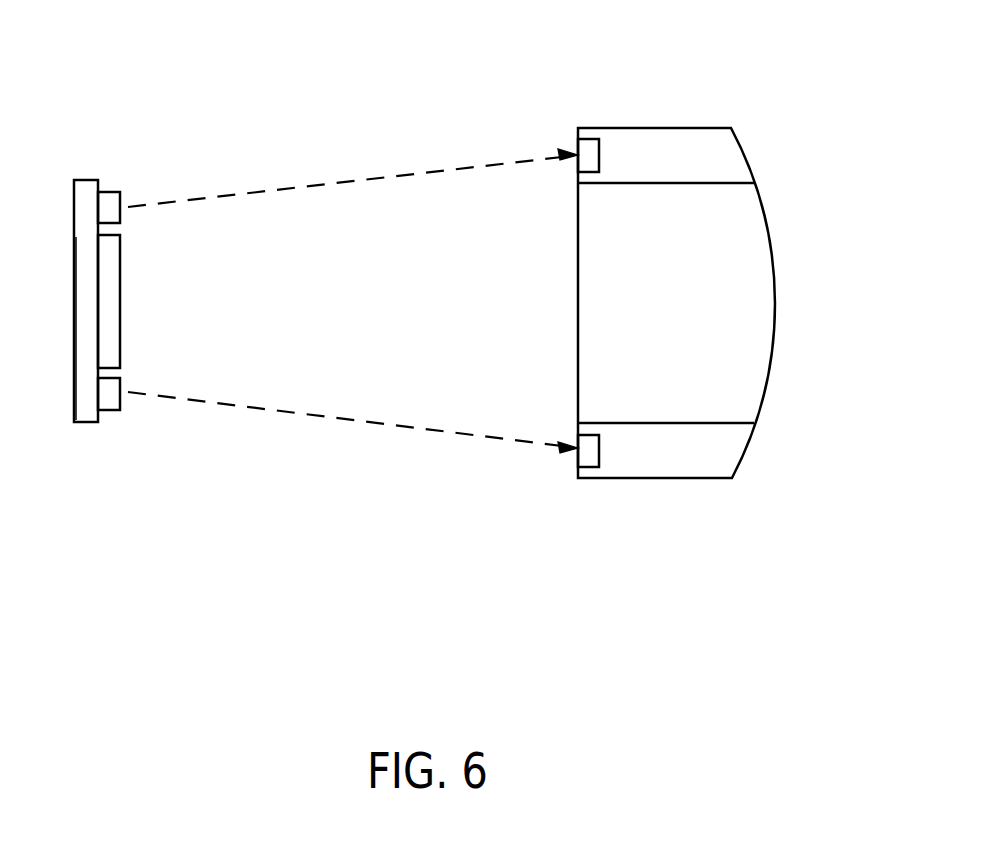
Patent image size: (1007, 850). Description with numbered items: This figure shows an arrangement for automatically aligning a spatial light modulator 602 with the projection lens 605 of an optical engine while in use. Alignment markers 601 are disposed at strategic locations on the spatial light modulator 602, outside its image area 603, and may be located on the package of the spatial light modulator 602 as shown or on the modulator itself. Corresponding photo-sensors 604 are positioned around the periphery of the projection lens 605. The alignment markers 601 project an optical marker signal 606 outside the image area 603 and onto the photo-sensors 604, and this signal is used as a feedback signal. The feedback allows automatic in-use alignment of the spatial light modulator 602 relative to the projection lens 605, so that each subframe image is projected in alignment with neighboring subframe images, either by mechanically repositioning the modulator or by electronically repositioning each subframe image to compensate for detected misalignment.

The alignment markers 601 is at (120, 200).
The spatial light modulator 602 is at (85, 422).
The image area 603 is at (148, 232).
The photo-sensors 604 is at (585, 150).
The projection lens 605 is at (690, 128).
The optical marker signal 606 is at (380, 178).